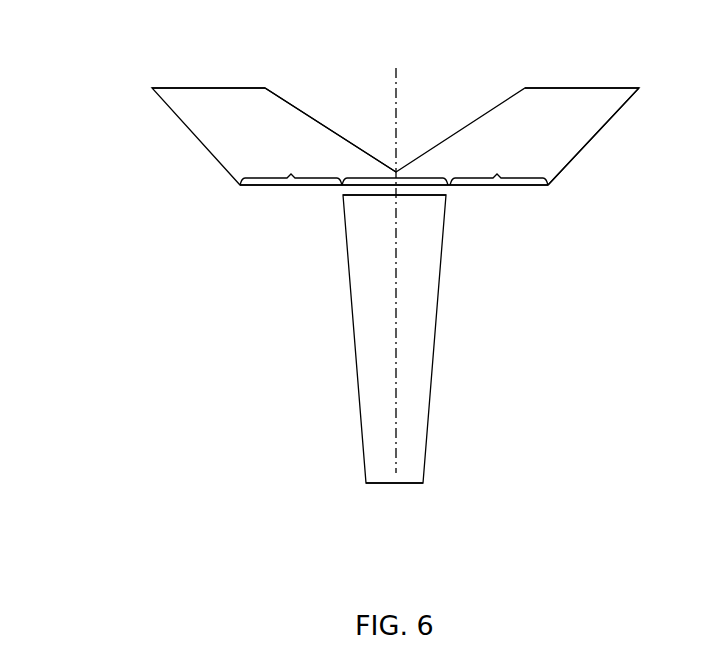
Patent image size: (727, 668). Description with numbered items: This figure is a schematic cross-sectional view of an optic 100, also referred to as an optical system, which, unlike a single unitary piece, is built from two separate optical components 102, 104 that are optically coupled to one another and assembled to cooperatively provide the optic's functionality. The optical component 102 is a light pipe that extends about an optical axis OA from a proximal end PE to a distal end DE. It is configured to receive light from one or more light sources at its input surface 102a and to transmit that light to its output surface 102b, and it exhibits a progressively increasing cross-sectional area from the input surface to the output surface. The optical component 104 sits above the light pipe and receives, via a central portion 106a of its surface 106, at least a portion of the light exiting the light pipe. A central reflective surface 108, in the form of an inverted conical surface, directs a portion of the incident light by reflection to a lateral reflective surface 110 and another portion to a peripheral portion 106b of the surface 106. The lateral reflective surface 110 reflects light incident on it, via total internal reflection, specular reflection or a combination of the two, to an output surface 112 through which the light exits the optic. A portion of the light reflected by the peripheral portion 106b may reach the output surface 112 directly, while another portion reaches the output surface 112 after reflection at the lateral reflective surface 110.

The optic 100 is at (84, 79).
The light pipe 102 is at (333, 333).
The input surface 102a is at (407, 485).
The output surface 102b is at (430, 196).
The optical component 104 is at (181, 154).
The surface 106 is at (370, 188).
The central portion 106a is at (418, 177).
The peripheral portion 106b is at (394, 167).
The central reflective surface 108 is at (316, 105).
The lateral reflective surface 110 is at (594, 139).
The output surface 112 is at (203, 88).
The optical axis OA is at (397, 70).
The distal end DE is at (323, 201).
The proximal end PE is at (350, 494).